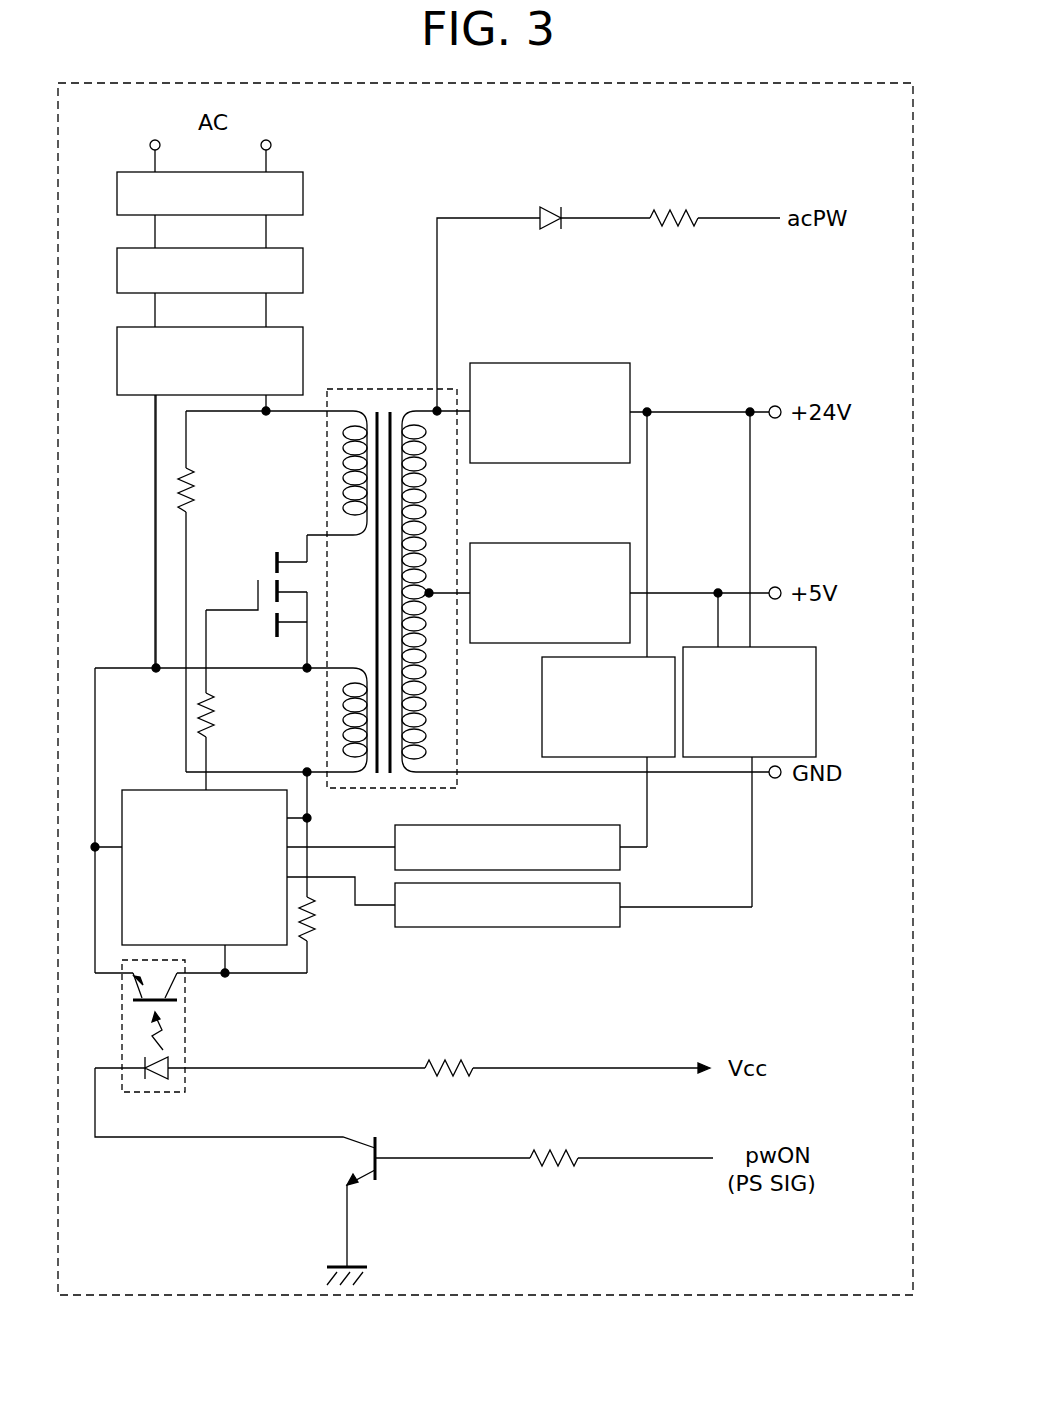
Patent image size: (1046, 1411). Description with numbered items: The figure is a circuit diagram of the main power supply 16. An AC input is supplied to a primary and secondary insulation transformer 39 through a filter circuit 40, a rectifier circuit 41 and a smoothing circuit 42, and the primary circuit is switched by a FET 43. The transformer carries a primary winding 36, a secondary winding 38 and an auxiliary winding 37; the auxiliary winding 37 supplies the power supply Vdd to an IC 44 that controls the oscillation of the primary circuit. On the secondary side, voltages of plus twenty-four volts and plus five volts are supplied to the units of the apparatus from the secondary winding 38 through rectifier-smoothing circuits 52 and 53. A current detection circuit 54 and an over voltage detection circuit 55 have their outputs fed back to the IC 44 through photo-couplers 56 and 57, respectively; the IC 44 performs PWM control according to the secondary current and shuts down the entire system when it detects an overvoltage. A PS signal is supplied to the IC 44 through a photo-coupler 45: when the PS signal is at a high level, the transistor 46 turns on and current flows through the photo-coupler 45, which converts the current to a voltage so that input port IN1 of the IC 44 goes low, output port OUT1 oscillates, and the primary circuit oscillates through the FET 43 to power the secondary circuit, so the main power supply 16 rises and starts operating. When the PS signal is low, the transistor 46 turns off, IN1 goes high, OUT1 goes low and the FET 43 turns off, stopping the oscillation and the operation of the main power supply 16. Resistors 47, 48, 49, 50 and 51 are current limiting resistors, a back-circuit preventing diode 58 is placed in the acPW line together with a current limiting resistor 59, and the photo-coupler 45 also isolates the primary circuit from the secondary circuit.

The main power supply 16 is at (773, 1295).
The primary winding 36 is at (343, 440).
The auxiliary winding 37 is at (343, 774).
The secondary winding 38 is at (426, 507).
The primary and secondary insulation transformer 39 is at (457, 650).
The filter circuit 40 is at (303, 196).
The rectifier circuit 41 is at (303, 272).
The smoothing circuit 42 is at (303, 361).
The FET 43 is at (258, 580).
The IC 44 is at (140, 790).
The photo-coupler 45 is at (186, 1020).
The transistor 46 is at (380, 1138).
The current limiting resistor 47 is at (215, 722).
The current limiting resistor 48 is at (315, 925).
The current limiting resistor 49 is at (446, 1057).
The current limiting resistor 50 is at (195, 492).
The current limiting resistor 51 is at (554, 1150).
The rectifier-smoothing circuit 52 is at (596, 363).
The rectifier-smoothing circuit 53 is at (596, 543).
The current detection circuit 54 is at (542, 737).
The over voltage detection circuit 55 is at (816, 667).
The photo-coupler 56 is at (515, 825).
The photo-coupler 57 is at (515, 927).
The back-circuit preventing diode 58 is at (550, 205).
The current limiting resistor 59 is at (673, 208).